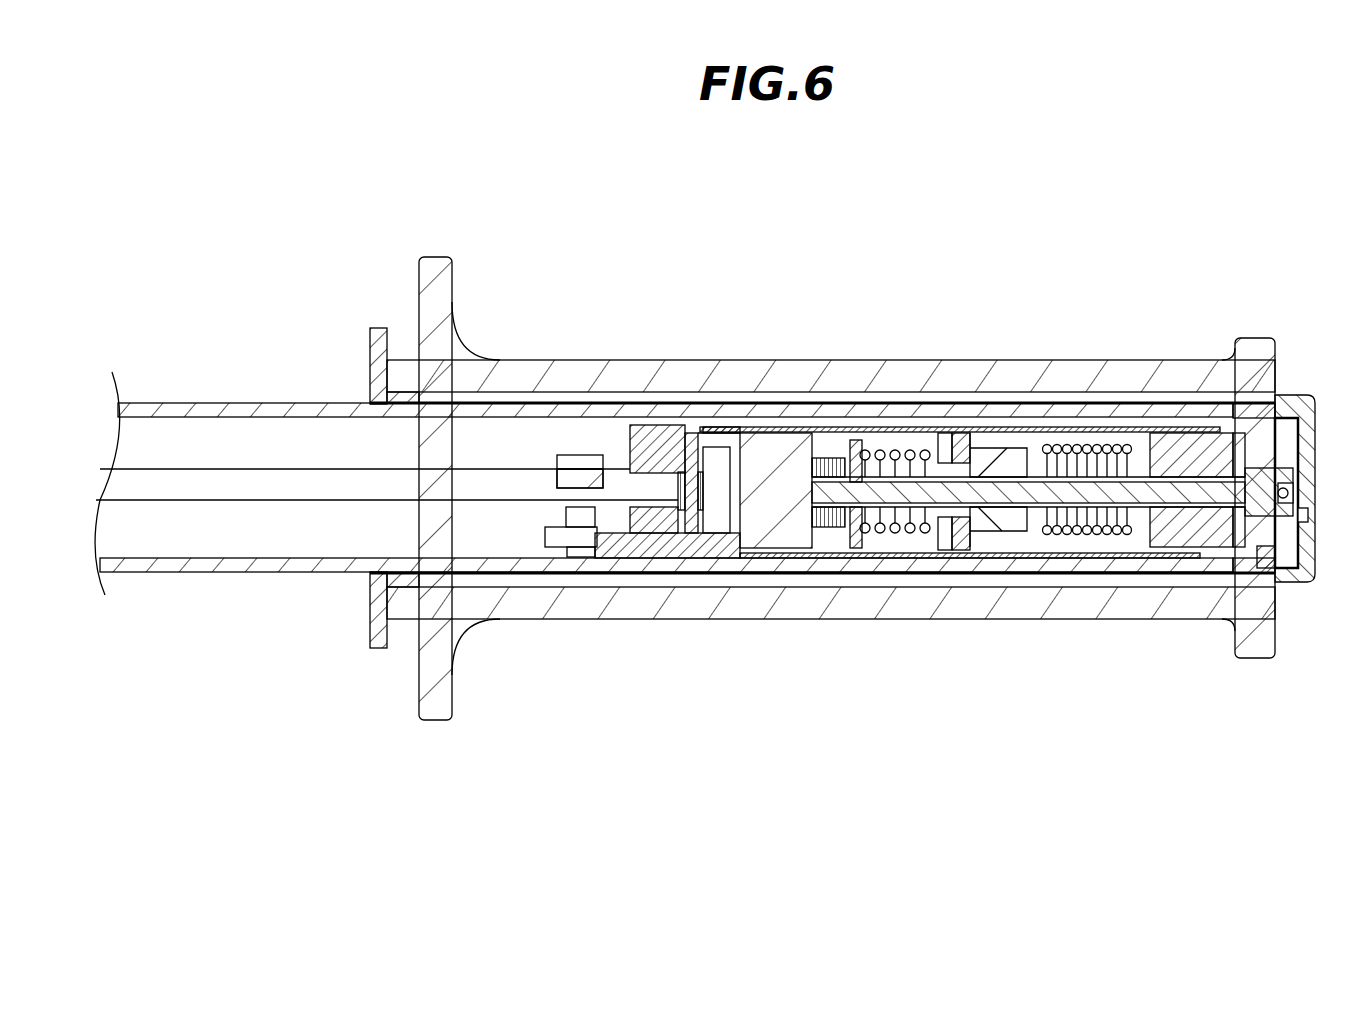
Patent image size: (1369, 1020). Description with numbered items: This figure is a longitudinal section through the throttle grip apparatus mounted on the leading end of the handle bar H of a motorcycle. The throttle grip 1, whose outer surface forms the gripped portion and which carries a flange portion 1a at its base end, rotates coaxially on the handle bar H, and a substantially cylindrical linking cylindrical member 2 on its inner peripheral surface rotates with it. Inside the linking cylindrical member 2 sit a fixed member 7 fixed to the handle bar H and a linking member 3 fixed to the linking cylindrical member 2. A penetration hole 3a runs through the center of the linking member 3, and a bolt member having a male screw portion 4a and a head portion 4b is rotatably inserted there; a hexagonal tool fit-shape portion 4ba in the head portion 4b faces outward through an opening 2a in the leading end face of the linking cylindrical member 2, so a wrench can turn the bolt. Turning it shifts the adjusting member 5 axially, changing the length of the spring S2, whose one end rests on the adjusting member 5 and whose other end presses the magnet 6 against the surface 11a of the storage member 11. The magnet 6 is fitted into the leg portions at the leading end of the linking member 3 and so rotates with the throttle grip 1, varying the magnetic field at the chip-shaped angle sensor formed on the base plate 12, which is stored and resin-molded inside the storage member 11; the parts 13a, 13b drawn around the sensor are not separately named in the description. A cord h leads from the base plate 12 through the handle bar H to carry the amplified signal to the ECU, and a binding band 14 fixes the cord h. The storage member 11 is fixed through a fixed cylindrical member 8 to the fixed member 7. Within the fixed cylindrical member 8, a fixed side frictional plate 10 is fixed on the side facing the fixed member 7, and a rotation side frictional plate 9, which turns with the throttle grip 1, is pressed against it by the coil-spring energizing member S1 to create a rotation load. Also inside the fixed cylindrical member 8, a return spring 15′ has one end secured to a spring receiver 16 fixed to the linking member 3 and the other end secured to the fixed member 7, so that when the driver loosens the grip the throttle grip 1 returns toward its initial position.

The handle bar H is at (152, 402).
The cord h is at (203, 468).
The throttle grip 1 is at (603, 360).
The flange portion 1a is at (437, 257).
The linking cylindrical member 2 is at (657, 403).
The opening 2a is at (1306, 516).
The linking member 3 is at (1299, 435).
The penetration hole 3a is at (1148, 491).
The male screw portion 4a is at (900, 508).
The head portion 4b is at (1295, 483).
The tool fit-shape portion 4ba is at (1296, 500).
The adjusting member 5 is at (855, 548).
The magnet 6 is at (779, 445).
The fixed member 7 is at (1278, 560).
The fixed cylindrical member 8 is at (752, 558).
The rotation side frictional plate 9 is at (965, 552).
The fixed side frictional plate 10 is at (946, 552).
The storage member 11 is at (641, 428).
The surface of storage member 11a is at (724, 440).
The base plate 12 is at (690, 440).
The clamp element 13a is at (700, 512).
The clamp bracket 13b is at (668, 537).
The binding band 14 is at (573, 457).
The return spring 15′ is at (1058, 446).
The spring receiver 16 is at (1030, 548).
The energizing member S1 is at (891, 452).
The spring S2 is at (824, 458).